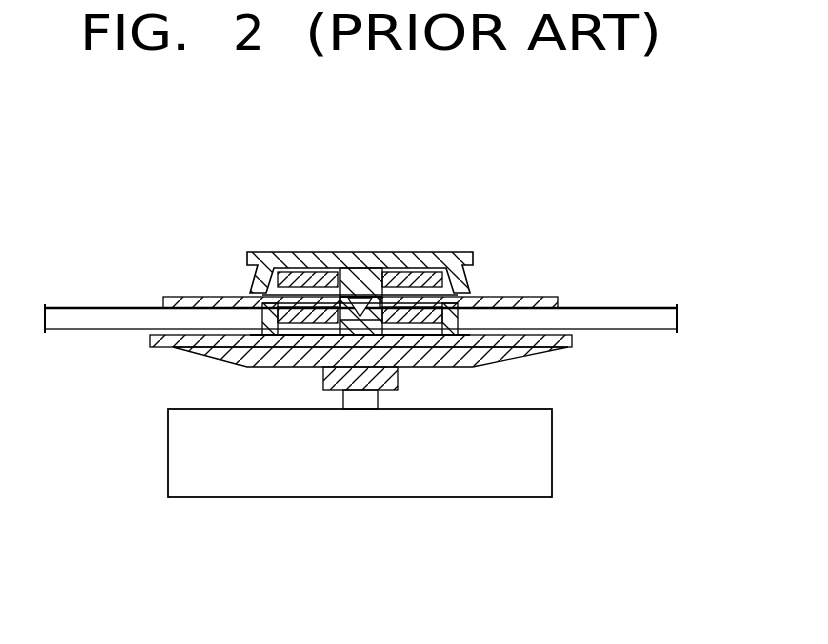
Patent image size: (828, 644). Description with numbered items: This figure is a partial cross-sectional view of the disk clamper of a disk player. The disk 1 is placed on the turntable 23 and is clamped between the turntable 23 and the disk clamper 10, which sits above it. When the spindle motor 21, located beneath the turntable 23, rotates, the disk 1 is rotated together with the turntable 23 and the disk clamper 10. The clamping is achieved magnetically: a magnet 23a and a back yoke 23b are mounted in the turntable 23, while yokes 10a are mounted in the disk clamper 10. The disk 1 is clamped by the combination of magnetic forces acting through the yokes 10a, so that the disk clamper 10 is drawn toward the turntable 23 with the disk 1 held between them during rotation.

The disk 1 is at (67, 309).
The disk clamper 10 is at (272, 252).
The yokes 10a is at (431, 252).
The spindle motor 21 is at (552, 445).
The turntable 23 is at (173, 350).
The magnet 23a is at (470, 298).
The back yoke 23b is at (445, 316).